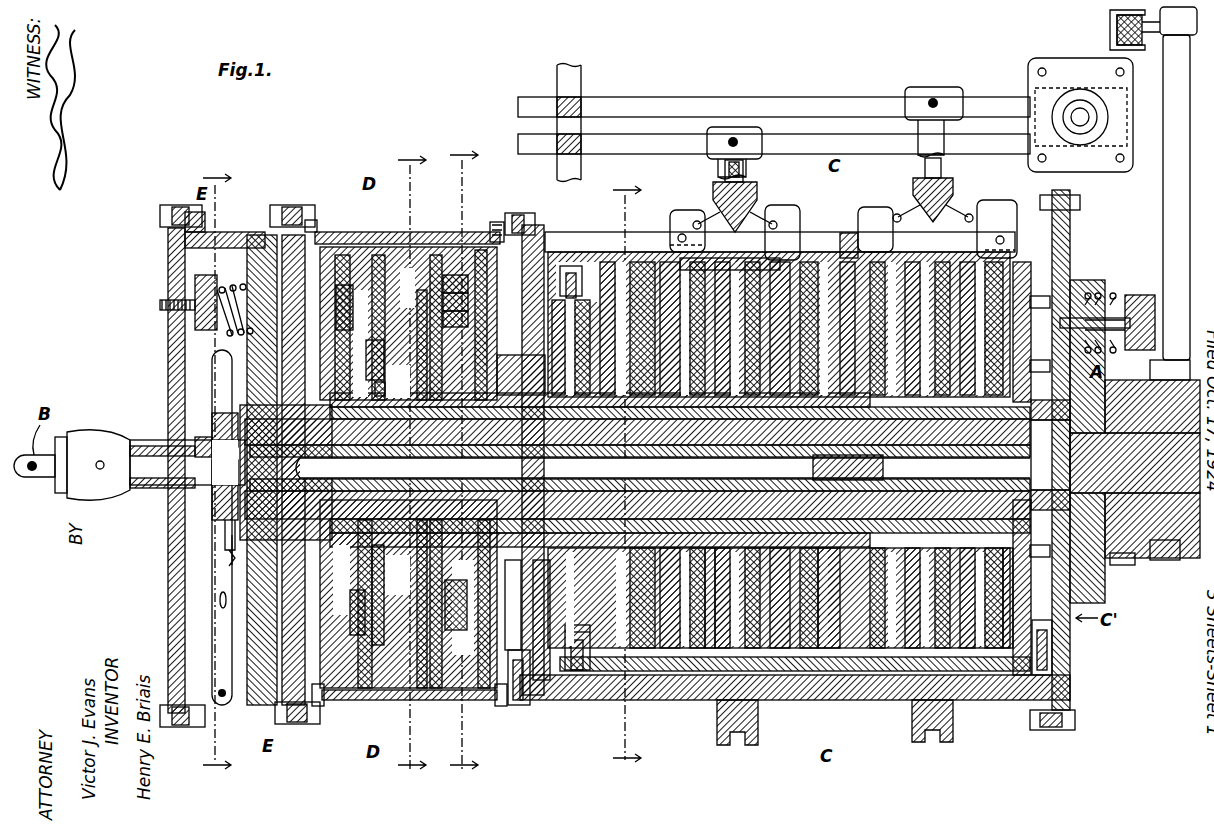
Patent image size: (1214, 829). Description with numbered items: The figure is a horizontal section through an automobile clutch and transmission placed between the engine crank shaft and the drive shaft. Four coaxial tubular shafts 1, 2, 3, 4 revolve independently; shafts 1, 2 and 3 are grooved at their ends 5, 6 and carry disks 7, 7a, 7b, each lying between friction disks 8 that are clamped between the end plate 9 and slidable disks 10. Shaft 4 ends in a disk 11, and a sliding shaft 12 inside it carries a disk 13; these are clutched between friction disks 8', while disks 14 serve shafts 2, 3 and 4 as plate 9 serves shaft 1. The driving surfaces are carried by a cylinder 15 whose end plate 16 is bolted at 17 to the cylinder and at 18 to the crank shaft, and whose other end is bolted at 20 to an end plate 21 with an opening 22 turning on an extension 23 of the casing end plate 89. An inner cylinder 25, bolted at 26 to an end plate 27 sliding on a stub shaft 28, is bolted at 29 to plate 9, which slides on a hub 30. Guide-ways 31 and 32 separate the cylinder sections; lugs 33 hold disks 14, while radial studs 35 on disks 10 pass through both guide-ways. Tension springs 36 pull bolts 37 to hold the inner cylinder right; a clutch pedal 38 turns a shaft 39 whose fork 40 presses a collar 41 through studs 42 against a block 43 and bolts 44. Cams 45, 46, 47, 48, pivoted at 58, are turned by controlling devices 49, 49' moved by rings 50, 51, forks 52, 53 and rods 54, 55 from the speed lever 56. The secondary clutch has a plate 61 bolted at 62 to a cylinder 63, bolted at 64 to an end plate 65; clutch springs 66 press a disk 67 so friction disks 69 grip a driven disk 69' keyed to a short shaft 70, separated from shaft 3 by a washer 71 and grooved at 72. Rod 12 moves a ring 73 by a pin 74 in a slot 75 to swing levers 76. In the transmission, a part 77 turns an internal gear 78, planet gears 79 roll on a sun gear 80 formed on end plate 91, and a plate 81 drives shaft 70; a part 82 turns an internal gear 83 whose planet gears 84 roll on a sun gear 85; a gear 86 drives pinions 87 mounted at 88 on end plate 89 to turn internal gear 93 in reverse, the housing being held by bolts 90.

The tubular shaft 1 is at (492, 458).
The tubular shaft 2 is at (553, 452).
The tubular shaft 3 is at (610, 452).
The tubular shaft 4 is at (140, 484).
The grooved end 5 is at (637, 464).
The grooved end 6 is at (725, 415).
The disk 7 is at (643, 650).
The disk 7a is at (720, 650).
The disk 7b is at (825, 650).
The friction disk 8 is at (727, 427).
The friction disk 8' is at (933, 455).
The end plate 9 is at (582, 263).
The disk 10 is at (965, 650).
The disk 11 is at (890, 650).
The sliding shaft 12 is at (1000, 465).
The disk 13 is at (935, 650).
The disk 14 is at (860, 650).
The cylinder 15 is at (1060, 680).
The end plate 16 is at (1070, 598).
The bolt 17 is at (1077, 718).
The bolt 18 is at (1015, 500).
The bolt 20 is at (515, 708).
The end plate 21 is at (540, 632).
The opening 22 is at (518, 565).
The extension 23 is at (496, 383).
The inner cylinder 25 is at (783, 670).
The bolt 26 is at (1055, 650).
The end plate 27 is at (1013, 600).
The stub shaft 28 is at (1000, 430).
The bolt 29 is at (576, 624).
The hub 30 is at (555, 380).
The guide-way 31 is at (565, 250).
The guideway 32 is at (919, 453).
The lug 33 is at (730, 266).
The radial stud 35 is at (857, 230).
The tension spring 36 is at (1102, 295).
The bolt 37 is at (1098, 332).
The clutch pedal 38 is at (1113, 26).
The shaft 39 is at (1170, 238).
The fork 40 is at (1180, 552).
The collar 41 is at (1162, 375).
The stud 42 is at (1155, 557).
The block 43 is at (1122, 564).
The bolt 44 is at (1005, 545).
The cam 45 is at (692, 213).
The cam 46 is at (778, 215).
The cam 47 is at (870, 213).
The cam 48 is at (997, 210).
The controlling device 49 is at (735, 200).
The controlling device 49' is at (940, 202).
The ring 50 is at (740, 745).
The ring 51 is at (938, 745).
The fork 52 is at (927, 173).
The fork 53 is at (717, 129).
The rod 54 is at (640, 110).
The rod 55 is at (814, 140).
The speed lever 56 is at (1080, 108).
The pivot 58 is at (1050, 238).
The plate 61 is at (168, 348).
The bolt 62 is at (200, 725).
The cylinder 63 is at (243, 232).
The bolt 64 is at (315, 212).
The end plate 65 is at (297, 726).
The clutch spring 66 is at (232, 545).
The disk 67 is at (165, 280).
The friction disk 69 is at (262, 449).
The driven disk 69' is at (272, 482).
The short shaft 70 is at (330, 465).
The washer 71 is at (360, 594).
The grooved end 72 is at (385, 388).
The ring 73 is at (212, 426).
The pin 74 is at (198, 445).
The slot 75 is at (215, 498).
The lever 76 is at (218, 583).
The part 77 is at (417, 572).
The internal gear 78 is at (355, 695).
The planet gear 79 is at (338, 250).
The sun gear 80 is at (350, 460).
The plate 81 is at (380, 255).
The part 82 is at (432, 270).
The internal gear 83 is at (408, 265).
The planet gear 84 is at (425, 690).
The sun gear 85 is at (387, 360).
The gear 86 is at (465, 342).
The pinion 87 is at (467, 327).
The pinion mounting 88 is at (470, 312).
The end plate 89 is at (495, 220).
The bolt 90 is at (400, 700).
The end plate 91 is at (327, 706).
The internal gear 93 is at (475, 702).